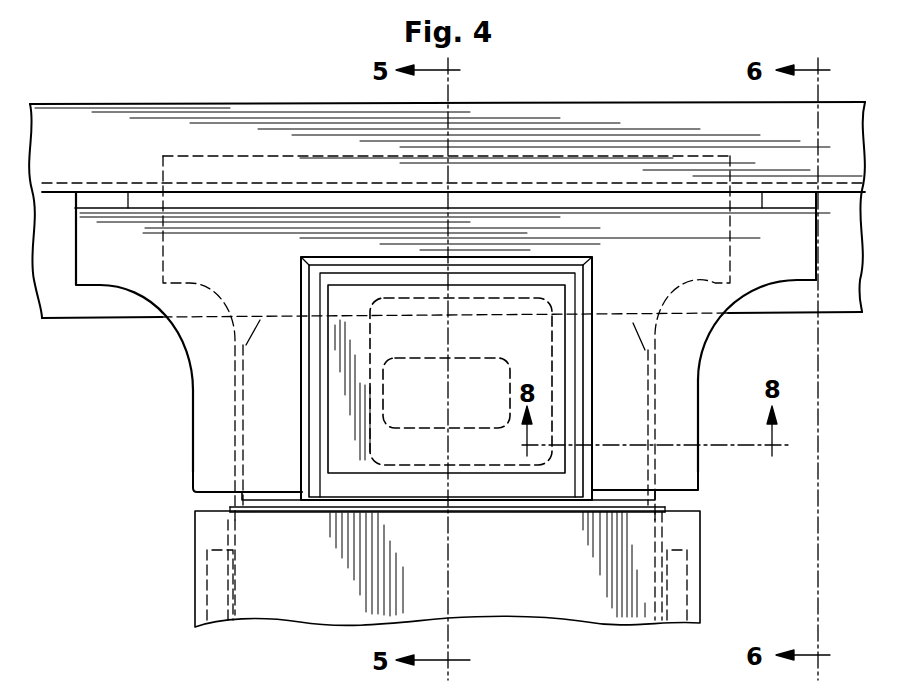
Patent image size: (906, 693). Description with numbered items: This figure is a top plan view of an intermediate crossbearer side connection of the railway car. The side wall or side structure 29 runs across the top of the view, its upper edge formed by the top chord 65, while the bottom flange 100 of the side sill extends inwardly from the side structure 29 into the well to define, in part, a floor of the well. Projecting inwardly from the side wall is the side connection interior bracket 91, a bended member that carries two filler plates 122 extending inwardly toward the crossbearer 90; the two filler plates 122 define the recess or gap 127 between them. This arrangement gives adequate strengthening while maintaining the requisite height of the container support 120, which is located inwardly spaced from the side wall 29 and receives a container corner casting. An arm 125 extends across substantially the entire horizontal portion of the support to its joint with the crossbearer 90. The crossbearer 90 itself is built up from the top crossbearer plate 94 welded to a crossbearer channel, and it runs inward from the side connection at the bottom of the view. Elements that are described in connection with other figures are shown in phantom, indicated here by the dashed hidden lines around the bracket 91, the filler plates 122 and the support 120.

The side structure 29 is at (248, 120).
The top chord 65 is at (665, 116).
The bottom flange 100 is at (787, 306).
The side connection interior bracket 91 is at (212, 488).
The arm 125 is at (205, 422).
The filler plates 122 is at (265, 391).
The container support 120 is at (342, 432).
The recess or gap 127 is at (300, 466).
The crossbearer 90 is at (590, 612).
The top crossbearer plate 94 is at (205, 541).